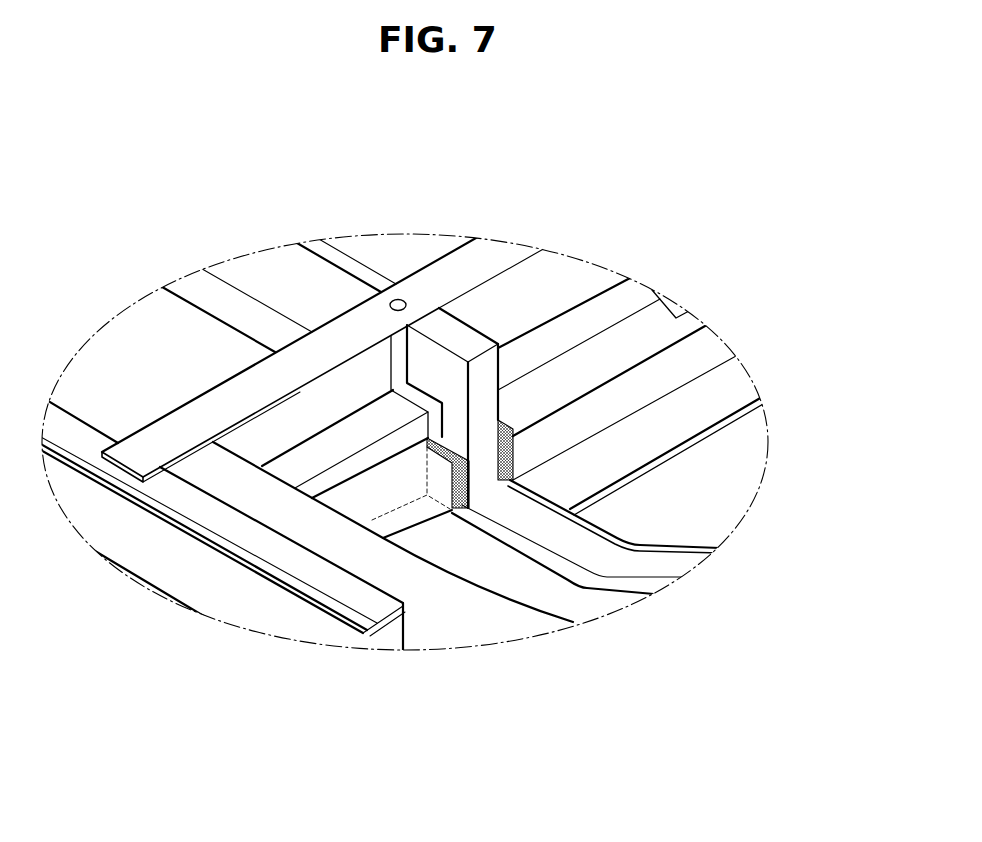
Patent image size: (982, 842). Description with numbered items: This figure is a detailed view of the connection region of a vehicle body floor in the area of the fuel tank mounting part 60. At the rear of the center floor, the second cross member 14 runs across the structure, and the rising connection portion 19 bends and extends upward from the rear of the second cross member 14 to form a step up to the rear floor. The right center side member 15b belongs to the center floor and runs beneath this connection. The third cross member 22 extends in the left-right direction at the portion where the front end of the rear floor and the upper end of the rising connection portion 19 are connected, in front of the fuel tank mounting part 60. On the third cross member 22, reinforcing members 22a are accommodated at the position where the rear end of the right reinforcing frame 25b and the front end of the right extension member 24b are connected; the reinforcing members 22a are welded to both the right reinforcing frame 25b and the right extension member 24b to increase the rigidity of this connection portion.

The second cross member 14 is at (213, 407).
The right center side member 15b is at (278, 260).
The right reinforcing frame 25b is at (457, 340).
The rising connection portion 19 is at (650, 335).
The third cross member 22 is at (607, 403).
The reinforcing members 22a is at (510, 482).
The right extension member 24b is at (582, 548).
The fuel tank mounting part 60 is at (711, 495).